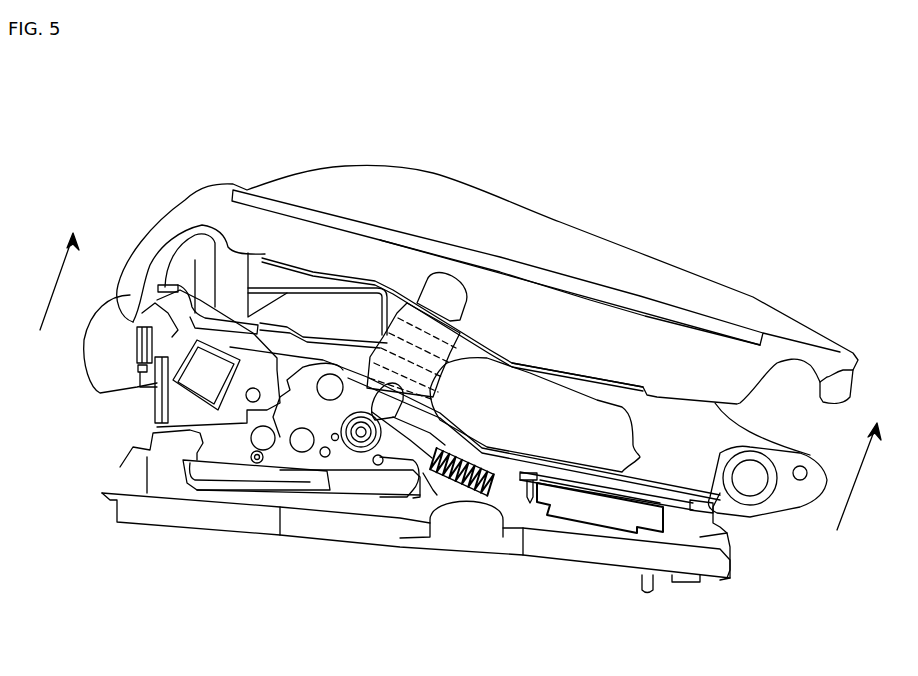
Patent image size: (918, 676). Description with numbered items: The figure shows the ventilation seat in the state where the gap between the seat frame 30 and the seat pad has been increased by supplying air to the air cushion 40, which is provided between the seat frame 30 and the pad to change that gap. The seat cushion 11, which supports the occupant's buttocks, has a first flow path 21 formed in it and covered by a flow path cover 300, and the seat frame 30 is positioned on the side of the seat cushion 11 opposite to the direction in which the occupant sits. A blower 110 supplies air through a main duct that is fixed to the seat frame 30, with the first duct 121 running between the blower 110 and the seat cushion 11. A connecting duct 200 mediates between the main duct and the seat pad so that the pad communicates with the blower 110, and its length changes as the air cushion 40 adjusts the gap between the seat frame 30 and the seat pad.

The seat cushion 11 is at (570, 224).
The first flow path 21 is at (446, 300).
The seat frame 30 is at (223, 538).
The air cushion 40 is at (597, 393).
The blower 110 is at (603, 513).
The first duct 121 is at (393, 437).
The connecting duct 200 is at (400, 300).
The flow path cover 300 is at (315, 270).